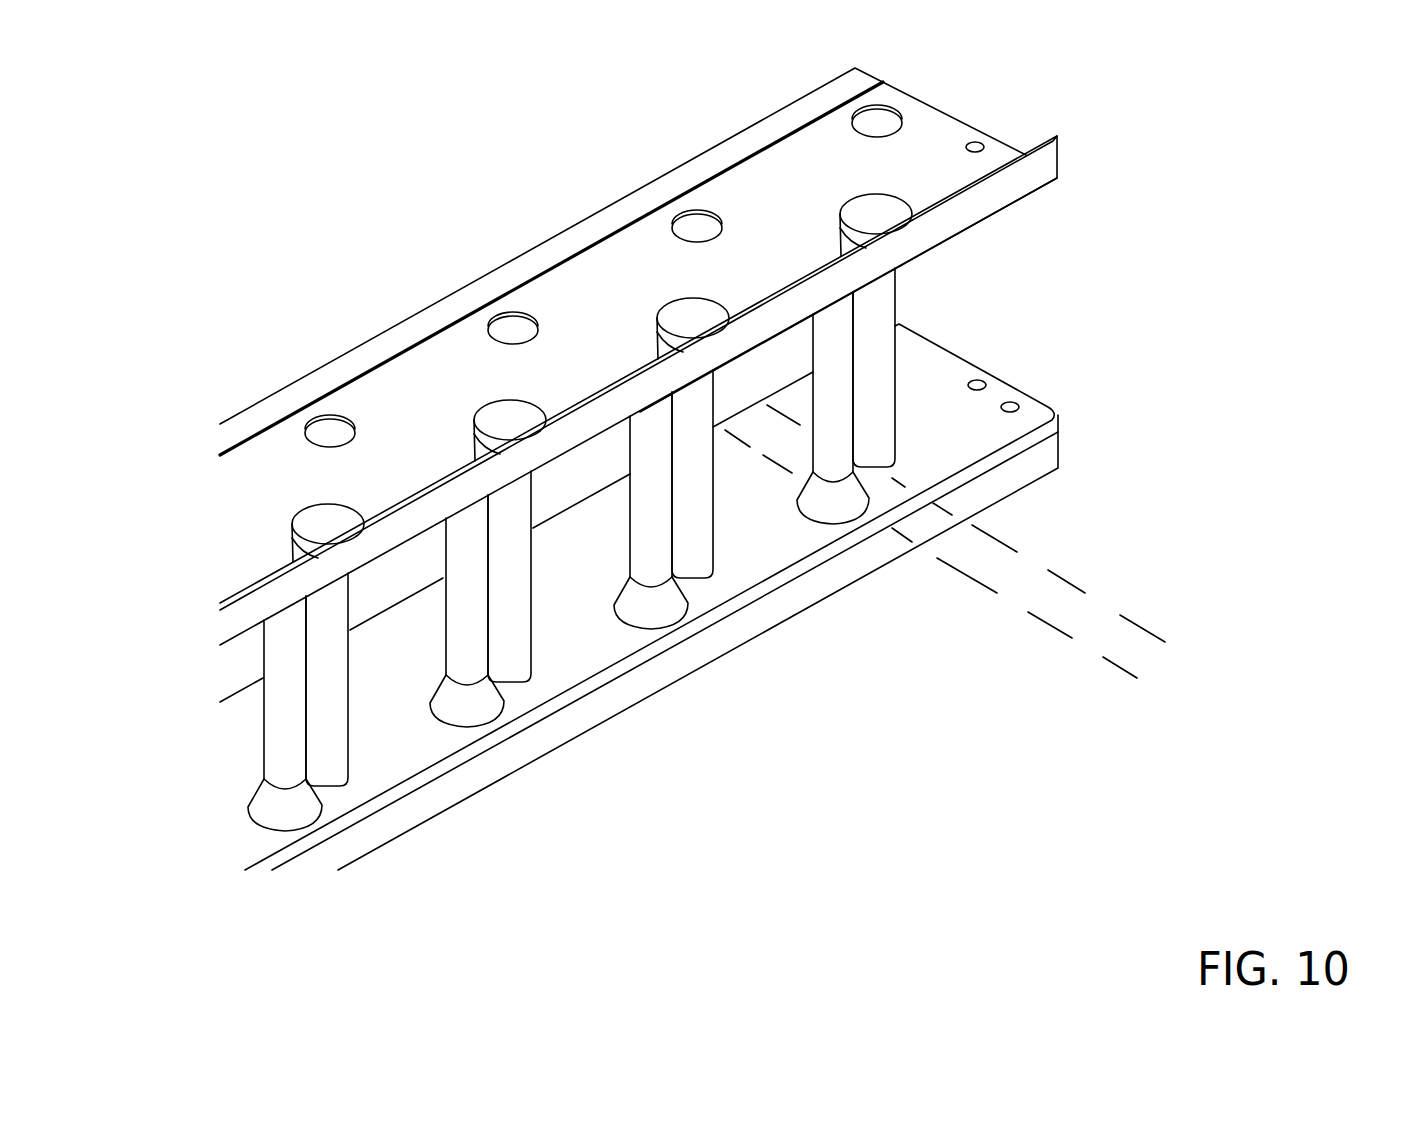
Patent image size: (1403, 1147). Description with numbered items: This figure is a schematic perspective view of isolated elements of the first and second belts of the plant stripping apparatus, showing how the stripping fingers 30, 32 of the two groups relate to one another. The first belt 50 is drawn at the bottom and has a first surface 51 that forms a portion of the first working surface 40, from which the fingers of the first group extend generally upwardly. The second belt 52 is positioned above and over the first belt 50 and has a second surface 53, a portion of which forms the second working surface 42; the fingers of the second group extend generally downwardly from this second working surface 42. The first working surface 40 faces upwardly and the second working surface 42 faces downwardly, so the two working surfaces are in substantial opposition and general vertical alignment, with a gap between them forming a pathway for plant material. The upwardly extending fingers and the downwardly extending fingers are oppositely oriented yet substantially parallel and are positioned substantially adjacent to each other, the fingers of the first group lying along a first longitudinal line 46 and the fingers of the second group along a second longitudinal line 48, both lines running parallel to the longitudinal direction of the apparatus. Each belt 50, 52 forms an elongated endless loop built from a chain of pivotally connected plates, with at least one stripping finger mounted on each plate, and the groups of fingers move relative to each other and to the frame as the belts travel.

The stripping finger 30 is at (825, 497).
The stripping finger 32 is at (877, 380).
The first working surface 40 is at (955, 442).
The second working surface 42 is at (990, 222).
The first longitudinal line 46 is at (1113, 668).
The second longitudinal line 48 is at (1077, 587).
The first belt 50 is at (706, 597).
The first surface 51 is at (1025, 421).
The second belt 52 is at (705, 356).
The second surface 53 is at (1038, 190).